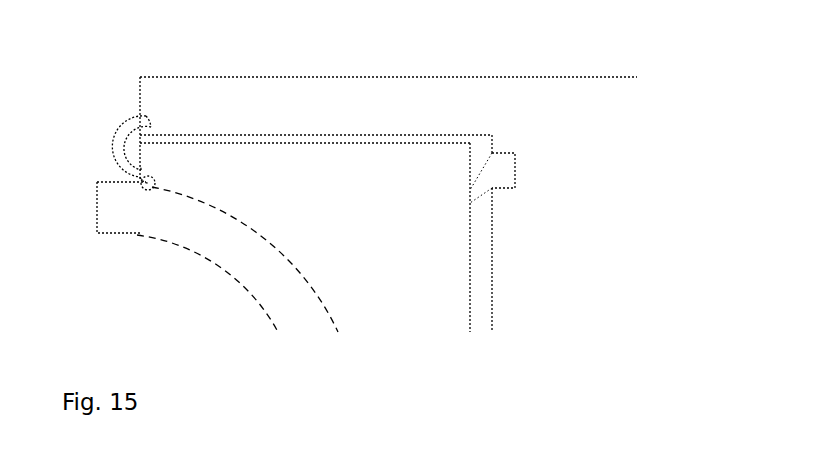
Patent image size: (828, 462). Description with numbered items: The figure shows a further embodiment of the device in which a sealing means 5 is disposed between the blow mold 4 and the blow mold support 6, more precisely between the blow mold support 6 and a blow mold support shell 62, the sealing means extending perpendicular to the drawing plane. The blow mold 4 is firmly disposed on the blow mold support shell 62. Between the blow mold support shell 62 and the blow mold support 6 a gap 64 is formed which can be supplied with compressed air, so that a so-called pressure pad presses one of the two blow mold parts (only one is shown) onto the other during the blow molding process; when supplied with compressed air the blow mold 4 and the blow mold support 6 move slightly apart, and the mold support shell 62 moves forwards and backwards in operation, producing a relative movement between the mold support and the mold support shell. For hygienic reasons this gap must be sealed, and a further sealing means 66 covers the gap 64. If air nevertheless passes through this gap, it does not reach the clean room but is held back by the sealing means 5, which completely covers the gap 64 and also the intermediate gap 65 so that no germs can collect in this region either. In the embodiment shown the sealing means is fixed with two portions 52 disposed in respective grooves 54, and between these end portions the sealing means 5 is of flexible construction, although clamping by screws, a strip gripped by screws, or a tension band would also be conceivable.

The blow mold 4 is at (290, 305).
The sealing means 5 is at (98, 138).
The blow mold support 6 is at (593, 283).
The portion 52 is at (145, 118).
The groove 54 is at (152, 126).
The blow mold support shell 62 is at (240, 195).
The gap 64 is at (482, 268).
The intermediate gap 65 is at (348, 137).
The sealing means 66 is at (483, 178).